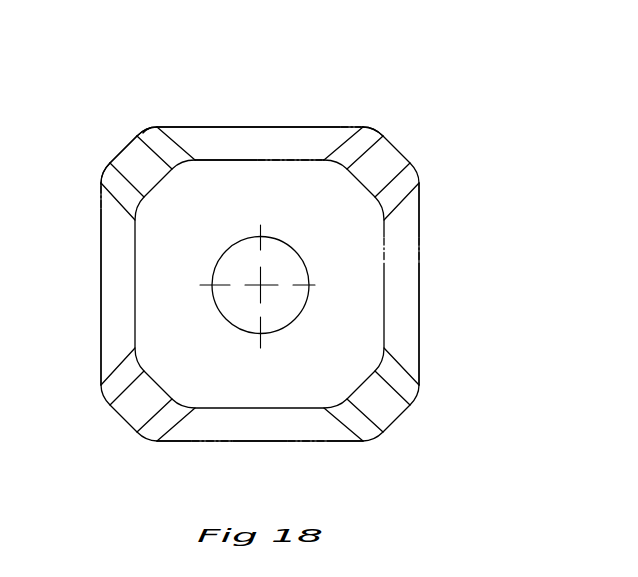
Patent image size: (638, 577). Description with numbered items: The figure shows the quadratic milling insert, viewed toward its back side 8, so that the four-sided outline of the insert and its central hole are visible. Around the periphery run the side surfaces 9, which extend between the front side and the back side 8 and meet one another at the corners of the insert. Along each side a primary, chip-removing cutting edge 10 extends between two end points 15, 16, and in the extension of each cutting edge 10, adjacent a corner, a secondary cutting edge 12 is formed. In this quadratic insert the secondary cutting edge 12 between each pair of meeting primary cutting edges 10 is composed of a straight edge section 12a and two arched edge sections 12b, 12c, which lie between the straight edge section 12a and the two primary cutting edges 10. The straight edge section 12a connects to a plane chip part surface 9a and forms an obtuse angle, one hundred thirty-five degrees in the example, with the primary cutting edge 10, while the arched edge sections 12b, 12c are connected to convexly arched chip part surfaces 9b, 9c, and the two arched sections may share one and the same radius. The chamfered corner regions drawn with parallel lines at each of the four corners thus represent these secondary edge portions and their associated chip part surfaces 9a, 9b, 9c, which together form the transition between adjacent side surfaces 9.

The back side 8 is at (333, 227).
The side surface 9 is at (274, 154).
The plane chip part surface 9a is at (159, 174).
The convexly arched chip part surface 9b is at (162, 145).
The convexly arched chip part surface 9c is at (127, 197).
The cutting edge 10 is at (257, 127).
The secondary cutting edge 12 is at (405, 134).
The straight edge section 12a is at (119, 147).
The arched edge section 12b is at (148, 132).
The arched edge section 12c is at (108, 167).
The end point 15 is at (363, 127).
The end point 16 is at (154, 126).